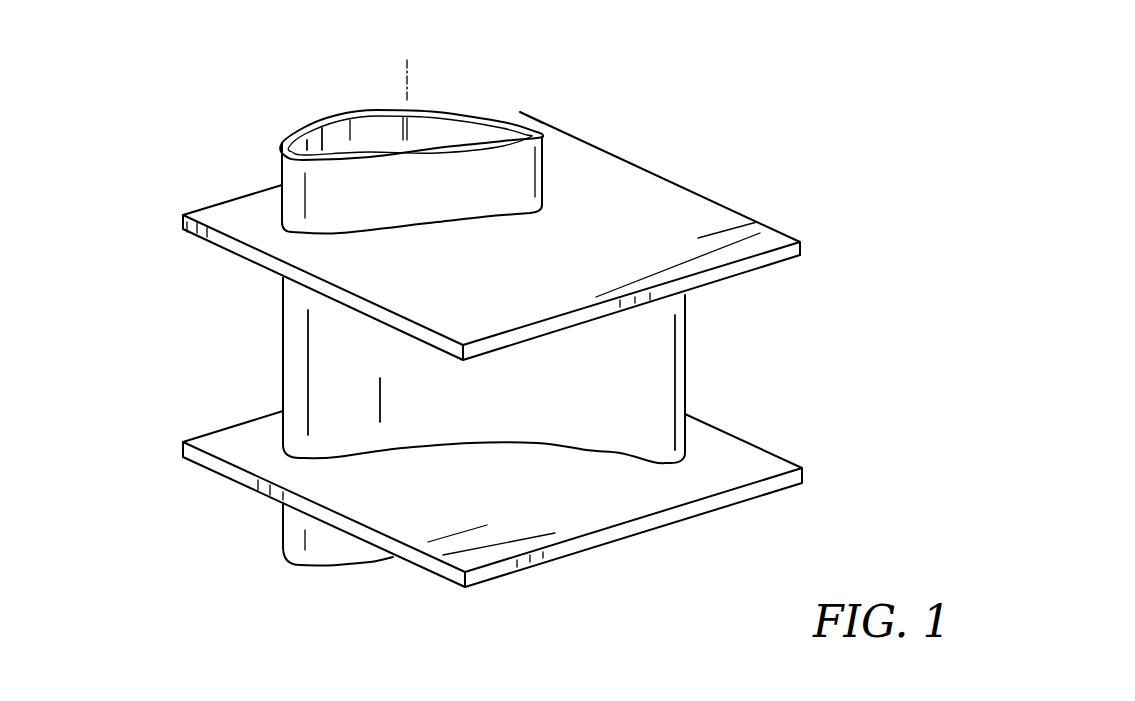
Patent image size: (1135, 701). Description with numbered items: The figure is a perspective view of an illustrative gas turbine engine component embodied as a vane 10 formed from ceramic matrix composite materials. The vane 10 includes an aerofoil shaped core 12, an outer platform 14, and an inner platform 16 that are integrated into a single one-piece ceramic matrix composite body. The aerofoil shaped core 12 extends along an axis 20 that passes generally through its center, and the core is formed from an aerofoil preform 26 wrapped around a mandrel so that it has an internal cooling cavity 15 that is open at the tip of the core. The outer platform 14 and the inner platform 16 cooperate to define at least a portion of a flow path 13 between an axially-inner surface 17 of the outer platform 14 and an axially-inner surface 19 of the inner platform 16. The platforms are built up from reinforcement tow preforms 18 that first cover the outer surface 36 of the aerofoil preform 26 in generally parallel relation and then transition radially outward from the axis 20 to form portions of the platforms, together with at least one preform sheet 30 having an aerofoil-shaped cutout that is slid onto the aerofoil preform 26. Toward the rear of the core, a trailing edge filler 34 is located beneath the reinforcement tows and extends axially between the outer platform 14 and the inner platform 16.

The vane 10 is at (785, 122).
The aerofoil shaped core 12 is at (272, 323).
The flow path 13 is at (122, 372).
The outer platform 14 is at (672, 200).
The internal cooling cavity 15 is at (303, 124).
The inner platform 16 is at (670, 538).
The axially-inner surface of the outer platform 17 is at (215, 243).
The reinforcement tow preforms 18 is at (733, 203).
The axially-inner surface of the inner platform 19 is at (220, 447).
The axis 20 is at (403, 95).
The aerofoil preform 26 is at (296, 373).
The preform sheet 30 is at (815, 250).
The trailing edge filler 34 is at (700, 346).
The outer surface of the aerofoil preform 36 is at (328, 408).